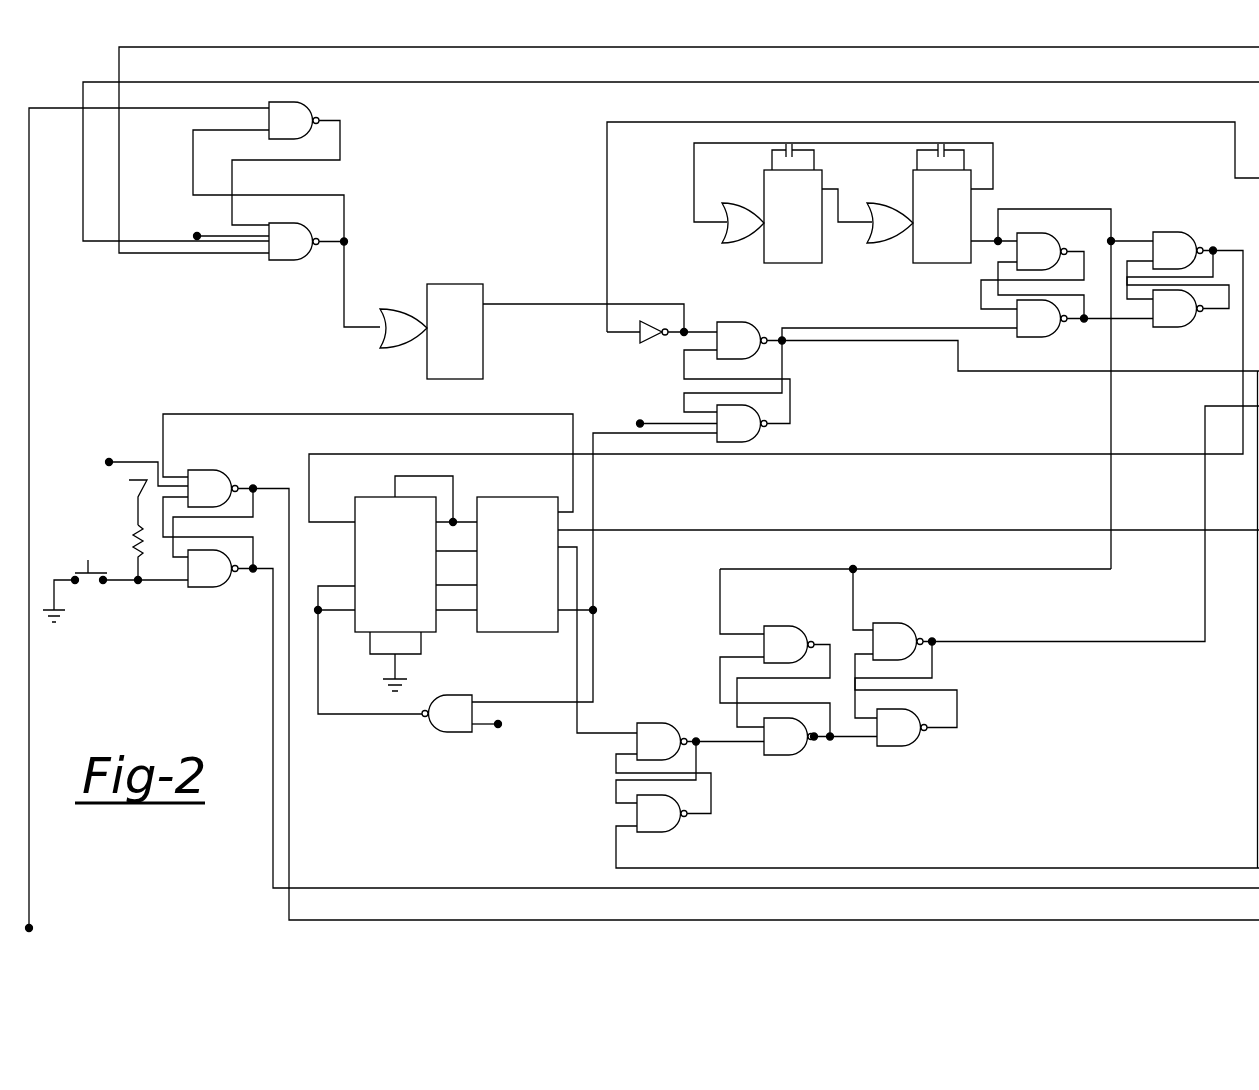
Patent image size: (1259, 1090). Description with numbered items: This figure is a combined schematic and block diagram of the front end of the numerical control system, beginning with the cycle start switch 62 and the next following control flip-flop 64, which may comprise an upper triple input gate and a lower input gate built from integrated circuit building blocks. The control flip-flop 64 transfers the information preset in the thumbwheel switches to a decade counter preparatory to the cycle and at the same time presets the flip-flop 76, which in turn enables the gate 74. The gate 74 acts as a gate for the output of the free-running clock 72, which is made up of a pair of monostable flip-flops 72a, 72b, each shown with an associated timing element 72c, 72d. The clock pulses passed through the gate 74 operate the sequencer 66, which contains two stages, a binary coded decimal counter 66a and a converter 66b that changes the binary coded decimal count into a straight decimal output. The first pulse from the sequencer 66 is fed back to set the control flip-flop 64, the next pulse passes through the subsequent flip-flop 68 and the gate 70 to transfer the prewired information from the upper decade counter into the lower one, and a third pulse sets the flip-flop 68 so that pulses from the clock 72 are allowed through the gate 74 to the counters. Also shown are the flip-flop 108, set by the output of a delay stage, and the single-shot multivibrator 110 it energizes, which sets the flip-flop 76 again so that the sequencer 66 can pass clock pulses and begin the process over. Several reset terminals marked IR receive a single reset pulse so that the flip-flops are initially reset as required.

The cycle start switch 62 is at (88, 561).
The control flip-flop 64 is at (224, 626).
The sequencer 66 is at (787, 601).
The binary coded decimal counter 66a is at (395, 564).
The converter 66b is at (525, 487).
The flip-flop 68 is at (724, 847).
The gate 70 is at (844, 779).
The free-running clock 72 is at (876, 226).
The monostable flip-flop 72a is at (801, 263).
The monostable flip-flop 72b is at (943, 263).
The timing capacitor 72c is at (817, 160).
The timing capacitor 72d is at (964, 161).
The gate 74 is at (1176, 361).
The flip-flop 76 is at (832, 396).
The flip-flop 108 is at (248, 295).
The single-shot multivibrator 110 is at (401, 384).